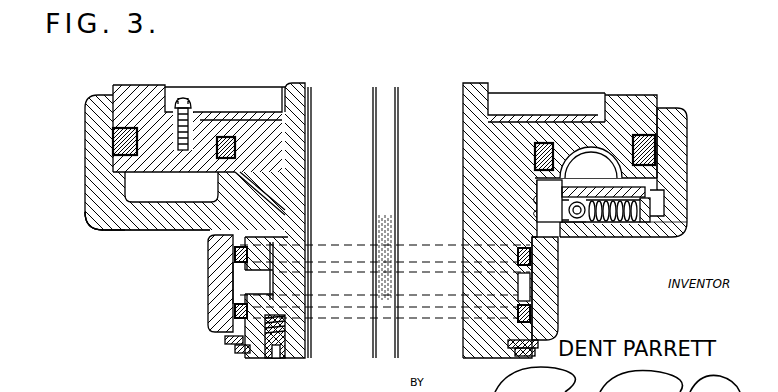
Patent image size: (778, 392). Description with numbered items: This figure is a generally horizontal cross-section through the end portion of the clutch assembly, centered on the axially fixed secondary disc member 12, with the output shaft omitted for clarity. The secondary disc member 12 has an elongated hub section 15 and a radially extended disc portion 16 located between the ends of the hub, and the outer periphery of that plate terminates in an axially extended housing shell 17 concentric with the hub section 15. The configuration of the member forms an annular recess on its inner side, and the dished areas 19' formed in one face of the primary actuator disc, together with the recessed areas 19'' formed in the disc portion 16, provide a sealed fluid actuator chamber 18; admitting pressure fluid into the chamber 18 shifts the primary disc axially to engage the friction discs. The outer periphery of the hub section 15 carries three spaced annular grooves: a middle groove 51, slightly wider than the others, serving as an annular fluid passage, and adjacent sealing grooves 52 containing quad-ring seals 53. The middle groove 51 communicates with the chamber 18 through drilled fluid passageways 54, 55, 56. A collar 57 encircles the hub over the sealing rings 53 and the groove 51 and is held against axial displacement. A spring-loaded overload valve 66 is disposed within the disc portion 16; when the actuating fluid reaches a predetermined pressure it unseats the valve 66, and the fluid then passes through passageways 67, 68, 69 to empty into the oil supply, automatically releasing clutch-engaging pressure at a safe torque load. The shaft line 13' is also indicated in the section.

The secondary disc member 12 is at (114, 233).
The shaft 13' is at (385, 222).
The hub section 15 is at (433, 220).
The disc portion 16 is at (134, 232).
The housing shell 17 is at (85, 142).
The fluid actuator chamber 18 is at (160, 183).
The dished areas 19' is at (385, 116).
The recessed areas 19'' is at (338, 191).
The middle groove 51 is at (528, 291).
The sealing grooves 52 is at (548, 318).
The quad-ring seals 53 is at (212, 263).
The fluid passageway 54 is at (235, 285).
The fluid passageway 55 is at (298, 277).
The fluid passageway 56 is at (238, 203).
The collar 57 is at (212, 320).
The overload valve 66 is at (578, 222).
The passageway 67 is at (548, 201).
The passageway 68 is at (592, 228).
The passageway 69 is at (620, 230).